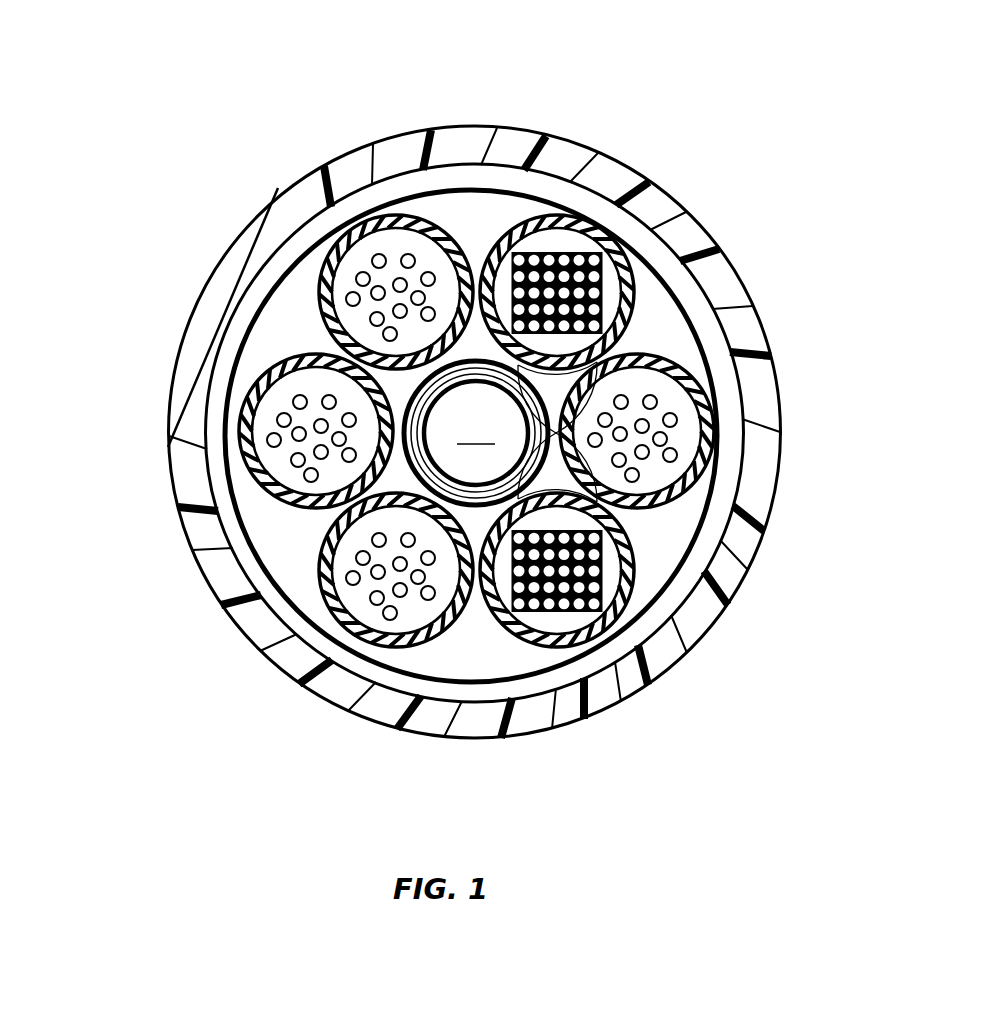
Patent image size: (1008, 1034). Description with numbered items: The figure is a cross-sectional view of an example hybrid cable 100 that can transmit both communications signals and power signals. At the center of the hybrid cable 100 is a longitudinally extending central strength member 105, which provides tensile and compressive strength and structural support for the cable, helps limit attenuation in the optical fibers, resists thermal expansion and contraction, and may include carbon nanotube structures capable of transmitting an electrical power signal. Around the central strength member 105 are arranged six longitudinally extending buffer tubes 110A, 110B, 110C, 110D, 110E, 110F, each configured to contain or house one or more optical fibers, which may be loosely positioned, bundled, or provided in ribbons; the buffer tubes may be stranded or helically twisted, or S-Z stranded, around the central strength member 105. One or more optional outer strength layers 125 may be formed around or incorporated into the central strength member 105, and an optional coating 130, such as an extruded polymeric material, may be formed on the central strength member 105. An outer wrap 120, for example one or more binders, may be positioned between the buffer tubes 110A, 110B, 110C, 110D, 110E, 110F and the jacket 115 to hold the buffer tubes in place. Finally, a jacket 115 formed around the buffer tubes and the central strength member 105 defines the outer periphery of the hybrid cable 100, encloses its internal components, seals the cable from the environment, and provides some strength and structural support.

The hybrid cable 100 is at (308, 69).
The central strength member 105 is at (437, 440).
The buffer tube 110A is at (637, 308).
The buffer tube 110B is at (703, 487).
The buffer tube 110C is at (606, 648).
The buffer tube 110D is at (350, 636).
The buffer tube 110E is at (241, 408).
The buffer tube 110F is at (310, 258).
The jacket 115 is at (648, 207).
The outer wrap 120 is at (673, 278).
The outer strength layer 125 is at (548, 386).
The coating 130 is at (548, 482).